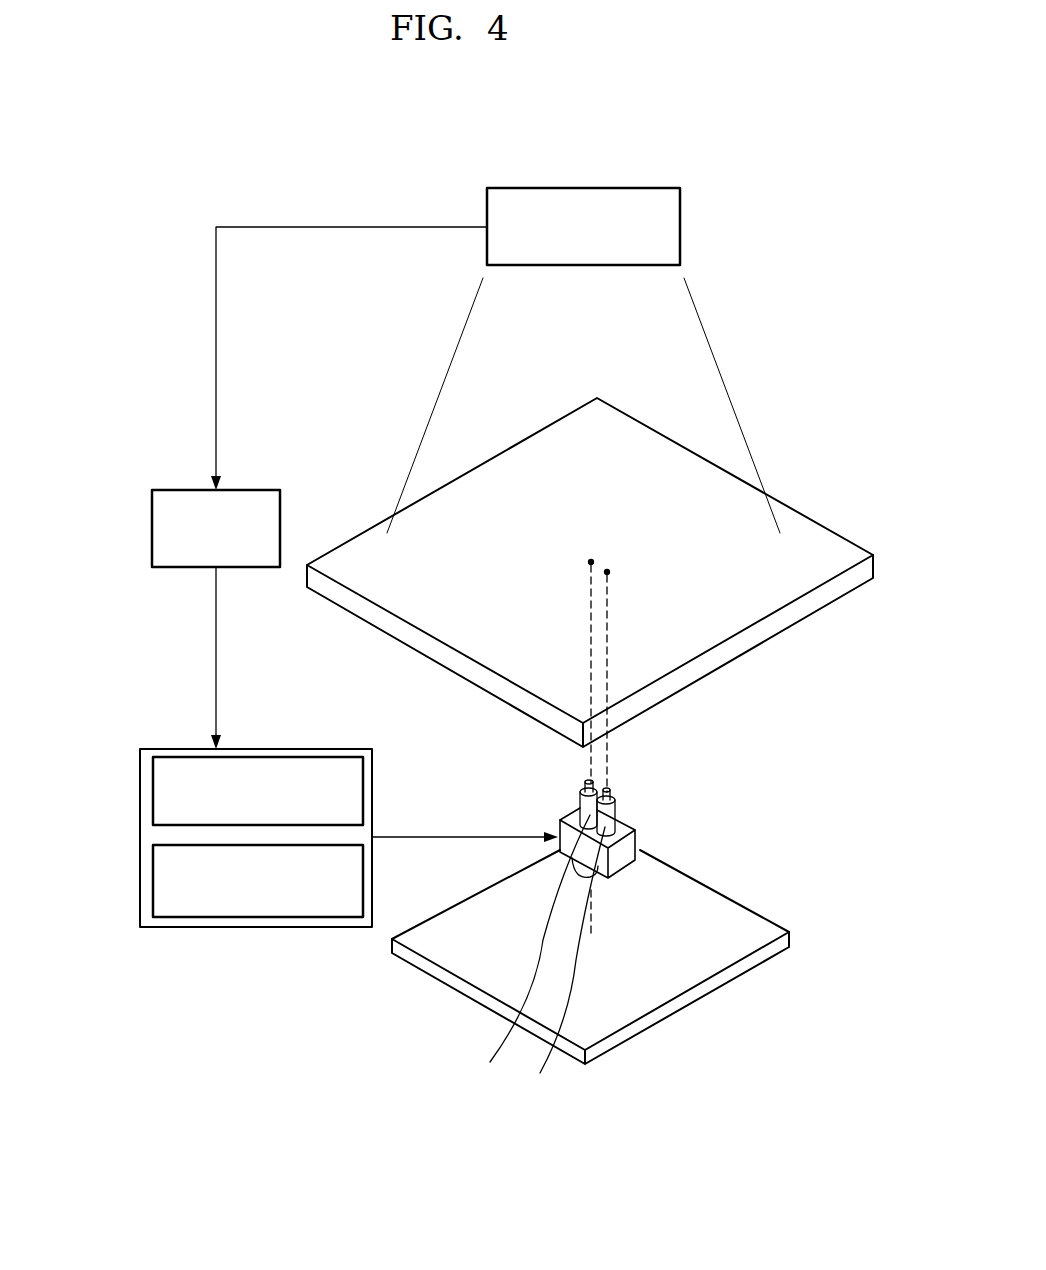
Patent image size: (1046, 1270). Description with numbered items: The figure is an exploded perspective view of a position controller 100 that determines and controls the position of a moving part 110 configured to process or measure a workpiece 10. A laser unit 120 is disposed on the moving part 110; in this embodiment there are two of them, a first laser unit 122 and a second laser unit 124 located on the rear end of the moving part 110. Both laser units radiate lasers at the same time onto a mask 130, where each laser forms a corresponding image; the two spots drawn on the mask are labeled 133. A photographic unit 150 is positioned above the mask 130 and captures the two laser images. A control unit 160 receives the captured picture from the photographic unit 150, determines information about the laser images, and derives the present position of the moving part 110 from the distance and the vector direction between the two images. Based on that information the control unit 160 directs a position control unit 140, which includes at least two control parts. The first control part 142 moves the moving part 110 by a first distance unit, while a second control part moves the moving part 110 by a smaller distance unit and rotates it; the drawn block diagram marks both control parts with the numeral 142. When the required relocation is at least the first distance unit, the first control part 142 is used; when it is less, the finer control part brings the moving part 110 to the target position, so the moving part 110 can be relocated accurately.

The position controller 100 is at (729, 171).
The photographic unit 150 is at (583, 188).
The control unit 160 is at (250, 490).
The position control unit 140 is at (197, 838).
The first control part 142 is at (153, 790).
The mask 130 is at (823, 546).
The marks 133 is at (602, 568).
The moving part 110 is at (591, 959).
The laser unit 120 is at (535, 959).
The first laser unit 122 is at (532, 935).
The second laser unit 124 is at (567, 945).
The workpiece 10 is at (747, 923).